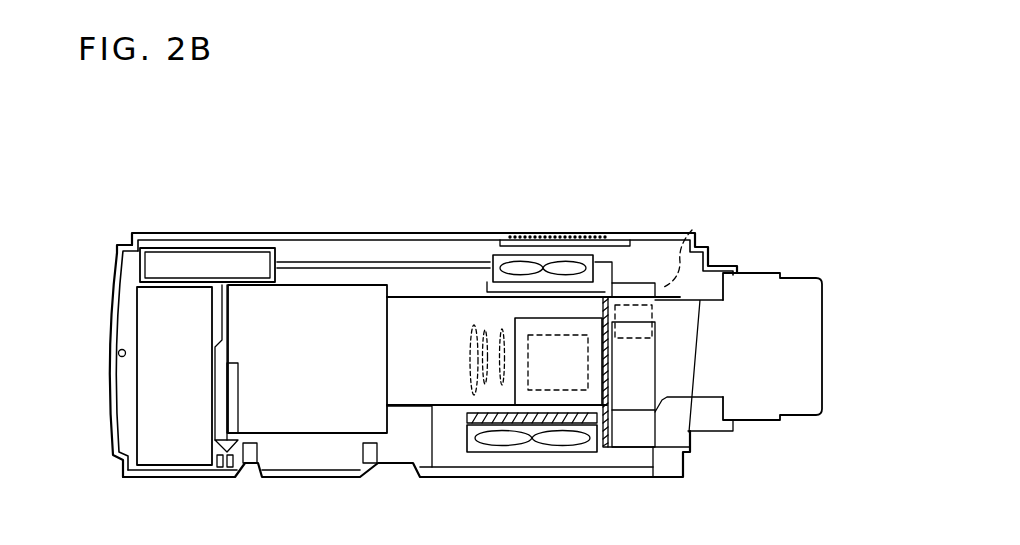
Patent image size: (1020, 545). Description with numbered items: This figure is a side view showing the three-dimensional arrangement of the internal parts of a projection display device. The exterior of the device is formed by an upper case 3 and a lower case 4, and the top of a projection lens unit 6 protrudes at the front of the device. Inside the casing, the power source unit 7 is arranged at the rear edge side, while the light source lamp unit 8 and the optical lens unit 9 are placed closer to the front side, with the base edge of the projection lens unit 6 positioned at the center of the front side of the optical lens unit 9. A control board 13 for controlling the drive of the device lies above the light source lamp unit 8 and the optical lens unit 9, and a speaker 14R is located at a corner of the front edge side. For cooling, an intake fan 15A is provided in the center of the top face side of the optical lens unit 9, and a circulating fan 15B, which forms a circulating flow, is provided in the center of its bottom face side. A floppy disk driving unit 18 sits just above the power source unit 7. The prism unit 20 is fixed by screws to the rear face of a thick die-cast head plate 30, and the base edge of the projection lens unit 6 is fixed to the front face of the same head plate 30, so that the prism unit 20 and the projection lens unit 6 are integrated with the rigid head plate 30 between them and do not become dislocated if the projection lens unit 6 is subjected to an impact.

The upper case 3 is at (172, 236).
The lower case 4 is at (180, 478).
The projection lens unit 6 is at (770, 264).
The power source unit 7 is at (155, 353).
The light source lamp unit 8 is at (272, 318).
The optical lens unit 9 is at (431, 286).
The control board 13 is at (338, 248).
The speaker 14R is at (692, 230).
The intake fan 15A is at (528, 262).
The circulating fan 15B is at (478, 455).
The floppy disk driving unit 18 is at (158, 268).
The prism unit 20 is at (553, 370).
The head plate 30 is at (630, 265).